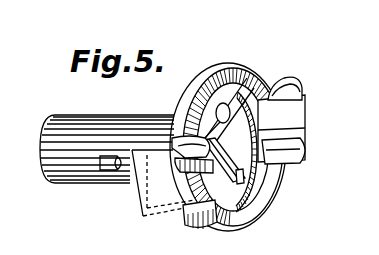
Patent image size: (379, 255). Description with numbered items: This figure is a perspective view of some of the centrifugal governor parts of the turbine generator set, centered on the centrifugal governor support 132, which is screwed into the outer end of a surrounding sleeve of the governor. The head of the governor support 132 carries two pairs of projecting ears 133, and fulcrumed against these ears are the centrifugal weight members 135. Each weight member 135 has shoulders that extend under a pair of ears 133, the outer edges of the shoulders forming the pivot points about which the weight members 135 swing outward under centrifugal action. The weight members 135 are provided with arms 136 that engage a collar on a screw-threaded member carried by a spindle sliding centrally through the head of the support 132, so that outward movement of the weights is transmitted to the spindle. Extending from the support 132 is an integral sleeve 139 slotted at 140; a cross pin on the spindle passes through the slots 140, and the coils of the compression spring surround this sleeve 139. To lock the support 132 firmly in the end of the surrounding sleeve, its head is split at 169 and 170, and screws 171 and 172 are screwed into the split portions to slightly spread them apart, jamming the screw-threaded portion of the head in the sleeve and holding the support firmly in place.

The centrifugal governor support 132 is at (270, 208).
The projecting ears 133 is at (190, 140).
The centrifugal weight members 135 is at (153, 178).
The arms 136 is at (187, 195).
The integral sleeve 139 is at (75, 170).
The slots 140 is at (122, 161).
The split 169 is at (248, 80).
The split 170 is at (252, 228).
The screw 171 is at (222, 104).
The screw 172 is at (244, 182).